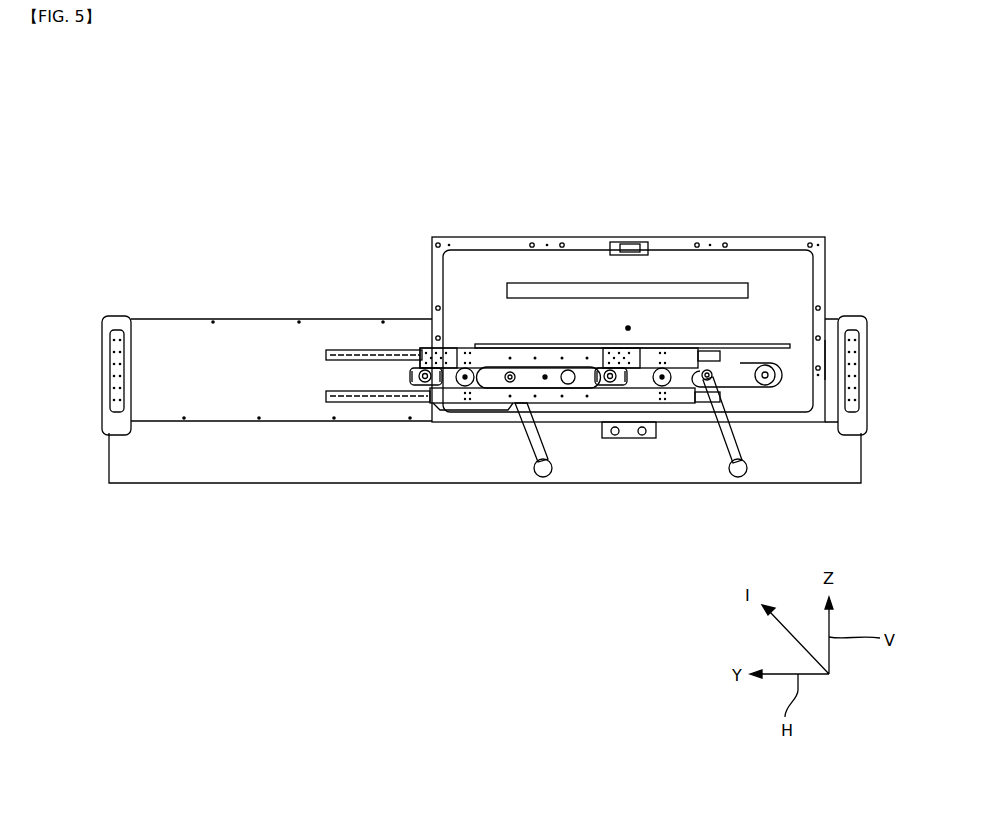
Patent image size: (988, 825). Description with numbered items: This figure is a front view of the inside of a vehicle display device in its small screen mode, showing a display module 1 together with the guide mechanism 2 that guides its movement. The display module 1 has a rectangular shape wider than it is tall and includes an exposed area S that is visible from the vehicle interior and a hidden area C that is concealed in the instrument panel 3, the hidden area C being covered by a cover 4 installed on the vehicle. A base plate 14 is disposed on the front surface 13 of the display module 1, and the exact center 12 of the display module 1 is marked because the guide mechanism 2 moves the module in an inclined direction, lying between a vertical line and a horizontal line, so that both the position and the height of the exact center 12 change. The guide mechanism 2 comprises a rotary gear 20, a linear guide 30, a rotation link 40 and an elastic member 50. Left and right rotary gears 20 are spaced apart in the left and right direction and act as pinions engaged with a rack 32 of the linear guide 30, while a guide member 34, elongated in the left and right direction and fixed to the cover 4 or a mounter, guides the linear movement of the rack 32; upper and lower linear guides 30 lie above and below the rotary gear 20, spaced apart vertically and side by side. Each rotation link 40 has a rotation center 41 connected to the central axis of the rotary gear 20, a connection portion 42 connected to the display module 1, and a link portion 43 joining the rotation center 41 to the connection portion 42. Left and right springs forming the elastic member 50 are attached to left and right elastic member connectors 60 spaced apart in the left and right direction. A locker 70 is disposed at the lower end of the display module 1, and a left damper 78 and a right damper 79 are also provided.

The display module 1 is at (828, 202).
The guide mechanism 2 is at (783, 350).
The instrument panel 3 is at (863, 318).
The cover 4 is at (157, 467).
The exact center 12 is at (628, 326).
The front surface 13 is at (777, 268).
The base plate 14 is at (590, 370).
The rotary gear 20 is at (463, 396).
The linear guide 30 is at (464, 418).
The rack 32 is at (438, 360).
The guide member 34 is at (400, 355).
The rotation link 40 is at (621, 256).
The rotation center 41 is at (490, 365).
The connection portion 42 is at (566, 368).
The link portion 43 is at (524, 372).
The elastic member 50 is at (532, 448).
The elastic member connector 60 is at (545, 477).
The locker 70 is at (630, 440).
The left damper 78 is at (610, 385).
The right damper 79 is at (413, 378).
The exposed area S is at (825, 257).
The hidden area C is at (825, 352).